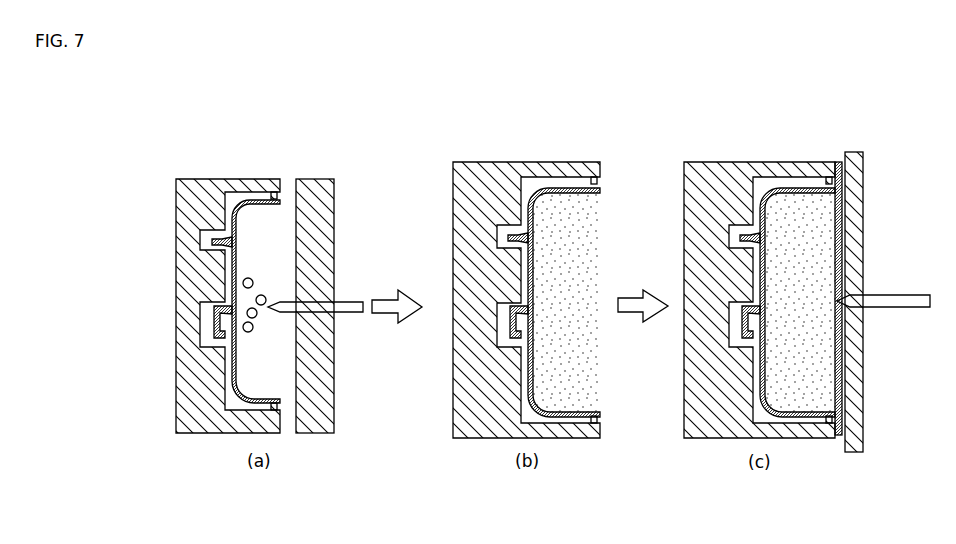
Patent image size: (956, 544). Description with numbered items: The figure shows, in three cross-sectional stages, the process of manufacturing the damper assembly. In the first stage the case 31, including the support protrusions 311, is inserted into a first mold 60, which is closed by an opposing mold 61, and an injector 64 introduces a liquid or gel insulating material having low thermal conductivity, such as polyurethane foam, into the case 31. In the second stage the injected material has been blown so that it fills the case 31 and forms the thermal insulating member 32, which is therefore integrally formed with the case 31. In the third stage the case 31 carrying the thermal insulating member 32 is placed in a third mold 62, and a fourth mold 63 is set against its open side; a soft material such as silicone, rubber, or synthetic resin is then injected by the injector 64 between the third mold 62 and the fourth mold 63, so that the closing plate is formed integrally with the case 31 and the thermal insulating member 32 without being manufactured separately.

The first mold 60 is at (204, 188).
The second mold (cover) 61 is at (317, 186).
The third mold 62 is at (716, 172).
The fourth mold 63 is at (856, 160).
The injector 64 is at (353, 302).
The case 31 is at (241, 399).
The support protrusions 311 is at (216, 330).
The thermal insulating member 32 is at (570, 190).